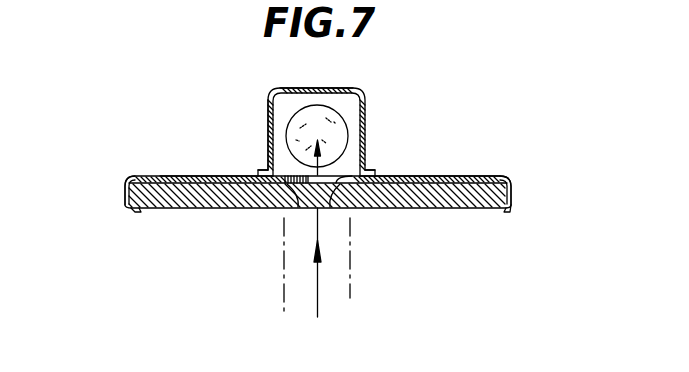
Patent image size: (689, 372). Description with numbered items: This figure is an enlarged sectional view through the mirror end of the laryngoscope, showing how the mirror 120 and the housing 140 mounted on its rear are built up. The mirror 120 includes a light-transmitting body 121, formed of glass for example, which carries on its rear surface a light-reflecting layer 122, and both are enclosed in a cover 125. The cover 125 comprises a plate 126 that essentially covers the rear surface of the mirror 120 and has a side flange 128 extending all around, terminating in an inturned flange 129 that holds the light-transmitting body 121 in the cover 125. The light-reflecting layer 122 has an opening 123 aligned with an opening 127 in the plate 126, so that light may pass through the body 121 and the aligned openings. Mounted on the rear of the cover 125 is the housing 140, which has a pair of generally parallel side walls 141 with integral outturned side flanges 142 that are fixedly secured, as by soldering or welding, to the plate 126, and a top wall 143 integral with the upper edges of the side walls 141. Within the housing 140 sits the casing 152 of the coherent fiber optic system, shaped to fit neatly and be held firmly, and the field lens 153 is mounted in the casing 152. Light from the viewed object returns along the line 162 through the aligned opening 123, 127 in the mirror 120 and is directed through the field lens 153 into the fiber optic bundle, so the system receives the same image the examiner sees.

The mirror 120 is at (120, 200).
The light-transmitting body 121 is at (205, 198).
The light-reflecting layer 122 is at (160, 175).
The opening 123 is at (297, 190).
The cover 125 is at (201, 174).
The plate 126 is at (436, 175).
The opening 127 is at (343, 200).
The side flange 128 is at (126, 186).
The inturned flange 129 is at (134, 210).
The housing 140 is at (284, 88).
The side walls 141 is at (272, 124).
The outturned side flanges 142 is at (264, 168).
The top wall 143 is at (324, 88).
The casing 152 is at (268, 107).
The field lens 153 is at (336, 130).
The line 162 is at (318, 300).